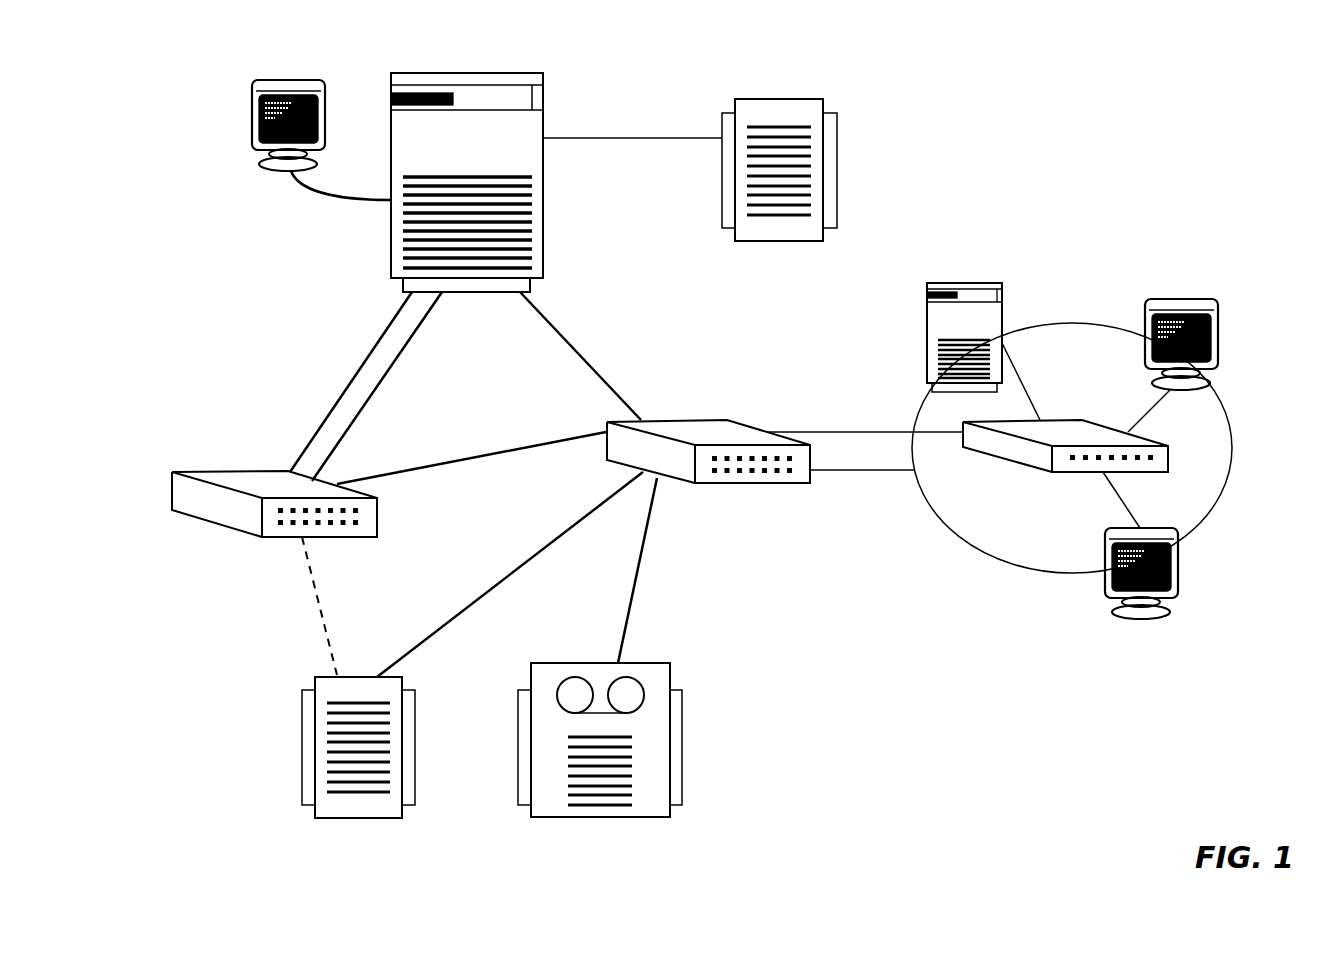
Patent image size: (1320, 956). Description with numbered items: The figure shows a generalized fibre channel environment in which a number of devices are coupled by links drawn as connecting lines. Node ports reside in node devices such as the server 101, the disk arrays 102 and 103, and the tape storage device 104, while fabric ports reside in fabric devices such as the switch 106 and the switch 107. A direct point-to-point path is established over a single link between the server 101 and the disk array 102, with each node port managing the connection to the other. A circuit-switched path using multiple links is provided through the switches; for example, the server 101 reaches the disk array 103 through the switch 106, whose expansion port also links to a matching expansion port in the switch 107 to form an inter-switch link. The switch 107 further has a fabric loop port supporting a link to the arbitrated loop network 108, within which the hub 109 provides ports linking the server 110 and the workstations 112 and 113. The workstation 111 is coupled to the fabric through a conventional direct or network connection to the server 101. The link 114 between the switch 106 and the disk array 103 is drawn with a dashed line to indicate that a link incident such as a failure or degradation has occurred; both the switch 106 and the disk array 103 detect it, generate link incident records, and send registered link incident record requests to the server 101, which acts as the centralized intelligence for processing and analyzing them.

The server 101 is at (494, 83).
The disk array 102 is at (811, 113).
The disk array 103 is at (338, 805).
The tape storage device 104 is at (658, 677).
The switch 106 is at (250, 483).
The switch 107 is at (722, 432).
The arbitrated loop network 108 is at (1152, 228).
The hub 109 is at (1015, 446).
The server 110 is at (977, 292).
The workstation 111 is at (291, 87).
The workstation 112 is at (1207, 302).
The workstation 113 is at (1143, 622).
The link 114 is at (300, 600).